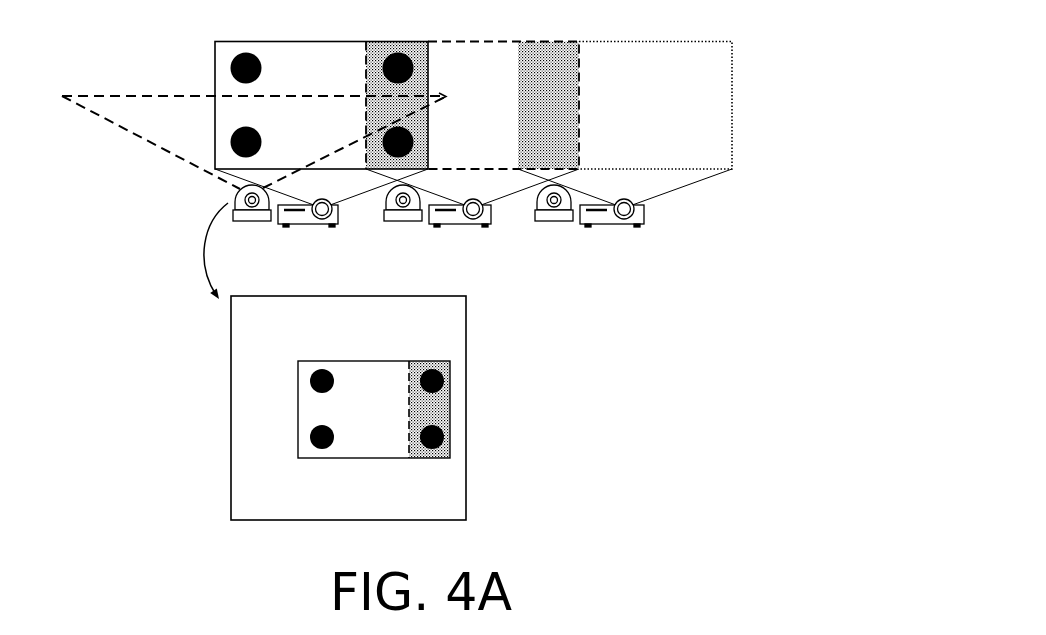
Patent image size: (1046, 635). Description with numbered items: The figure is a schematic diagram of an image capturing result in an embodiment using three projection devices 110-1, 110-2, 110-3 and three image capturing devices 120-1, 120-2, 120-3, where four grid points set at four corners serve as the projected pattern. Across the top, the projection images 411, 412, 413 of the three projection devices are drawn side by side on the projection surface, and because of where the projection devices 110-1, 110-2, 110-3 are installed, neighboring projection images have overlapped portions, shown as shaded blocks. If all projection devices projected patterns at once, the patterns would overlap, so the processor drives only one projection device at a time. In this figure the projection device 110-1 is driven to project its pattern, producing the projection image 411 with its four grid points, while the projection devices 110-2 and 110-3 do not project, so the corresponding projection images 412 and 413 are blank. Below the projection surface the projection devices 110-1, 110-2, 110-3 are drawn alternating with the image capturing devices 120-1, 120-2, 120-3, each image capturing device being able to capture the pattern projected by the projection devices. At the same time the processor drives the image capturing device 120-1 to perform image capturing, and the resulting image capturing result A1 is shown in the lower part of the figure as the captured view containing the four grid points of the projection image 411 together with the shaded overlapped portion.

The projection image 411 is at (272, 42).
The projection image 412 is at (460, 42).
The projection image 413 is at (617, 42).
The projection device 110-1 is at (308, 224).
The projection device 110-2 is at (462, 224).
The projection device 110-3 is at (621, 224).
The image capturing device 120-1 is at (253, 221).
The image capturing device 120-2 is at (410, 221).
The image capturing device 120-3 is at (566, 221).
The image capturing result A1 is at (467, 473).